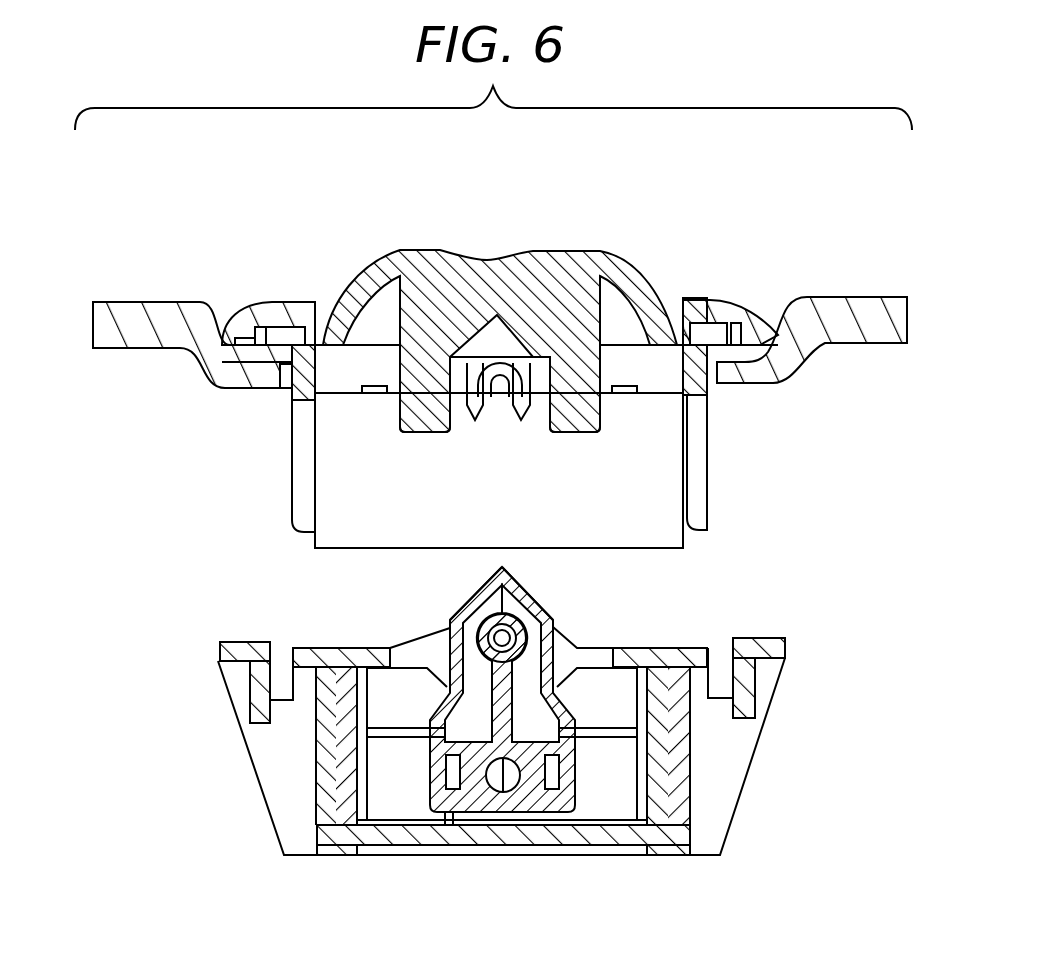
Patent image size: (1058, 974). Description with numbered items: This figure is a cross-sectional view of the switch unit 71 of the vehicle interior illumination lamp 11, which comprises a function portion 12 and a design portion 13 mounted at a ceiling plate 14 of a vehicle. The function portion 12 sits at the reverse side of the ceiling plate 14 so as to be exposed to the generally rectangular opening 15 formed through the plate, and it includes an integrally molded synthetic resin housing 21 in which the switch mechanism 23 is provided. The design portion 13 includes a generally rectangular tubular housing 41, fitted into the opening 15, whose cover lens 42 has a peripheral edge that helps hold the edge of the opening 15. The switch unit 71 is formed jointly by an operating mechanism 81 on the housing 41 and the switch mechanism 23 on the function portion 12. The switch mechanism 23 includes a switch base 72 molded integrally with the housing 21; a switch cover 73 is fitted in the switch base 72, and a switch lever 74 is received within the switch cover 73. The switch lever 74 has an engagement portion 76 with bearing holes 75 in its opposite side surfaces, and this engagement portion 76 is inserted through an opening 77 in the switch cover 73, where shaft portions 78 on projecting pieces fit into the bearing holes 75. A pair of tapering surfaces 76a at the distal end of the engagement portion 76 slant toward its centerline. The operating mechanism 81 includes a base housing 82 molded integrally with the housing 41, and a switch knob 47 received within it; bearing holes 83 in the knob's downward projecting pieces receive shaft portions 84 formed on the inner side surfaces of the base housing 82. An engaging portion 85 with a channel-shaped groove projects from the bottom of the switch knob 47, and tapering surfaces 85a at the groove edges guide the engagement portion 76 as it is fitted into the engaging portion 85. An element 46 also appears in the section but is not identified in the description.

The vehicle interior illumination lamp 11 is at (500, 358).
The function portion 12 is at (494, 751).
The design portion 13 is at (262, 275).
The ceiling plate 14 is at (164, 298).
The opening 15 is at (710, 393).
The housing 21 is at (494, 751).
The switch mechanism 23 is at (298, 665).
The housing 41 is at (712, 512).
The cover lens 42 is at (744, 297).
The rib 46 is at (673, 297).
The switch knob 47 is at (444, 248).
The switch unit 71 is at (153, 490).
The switch base 72 is at (690, 806).
The switch cover 73 is at (677, 742).
The switch lever 74 is at (501, 740).
The bearing holes 75 is at (557, 673).
The engagement portion 76 is at (443, 675).
The tapering surfaces 76a is at (468, 588).
The opening 77 is at (597, 658).
The shaft portions 78 is at (450, 625).
The operating mechanism 81 is at (293, 462).
The base housing 82 is at (710, 468).
The bearing holes 83 is at (490, 405).
The shaft portions 84 is at (528, 365).
The engaging portion 85 is at (540, 405).
The tapering surfaces 85a is at (443, 420).